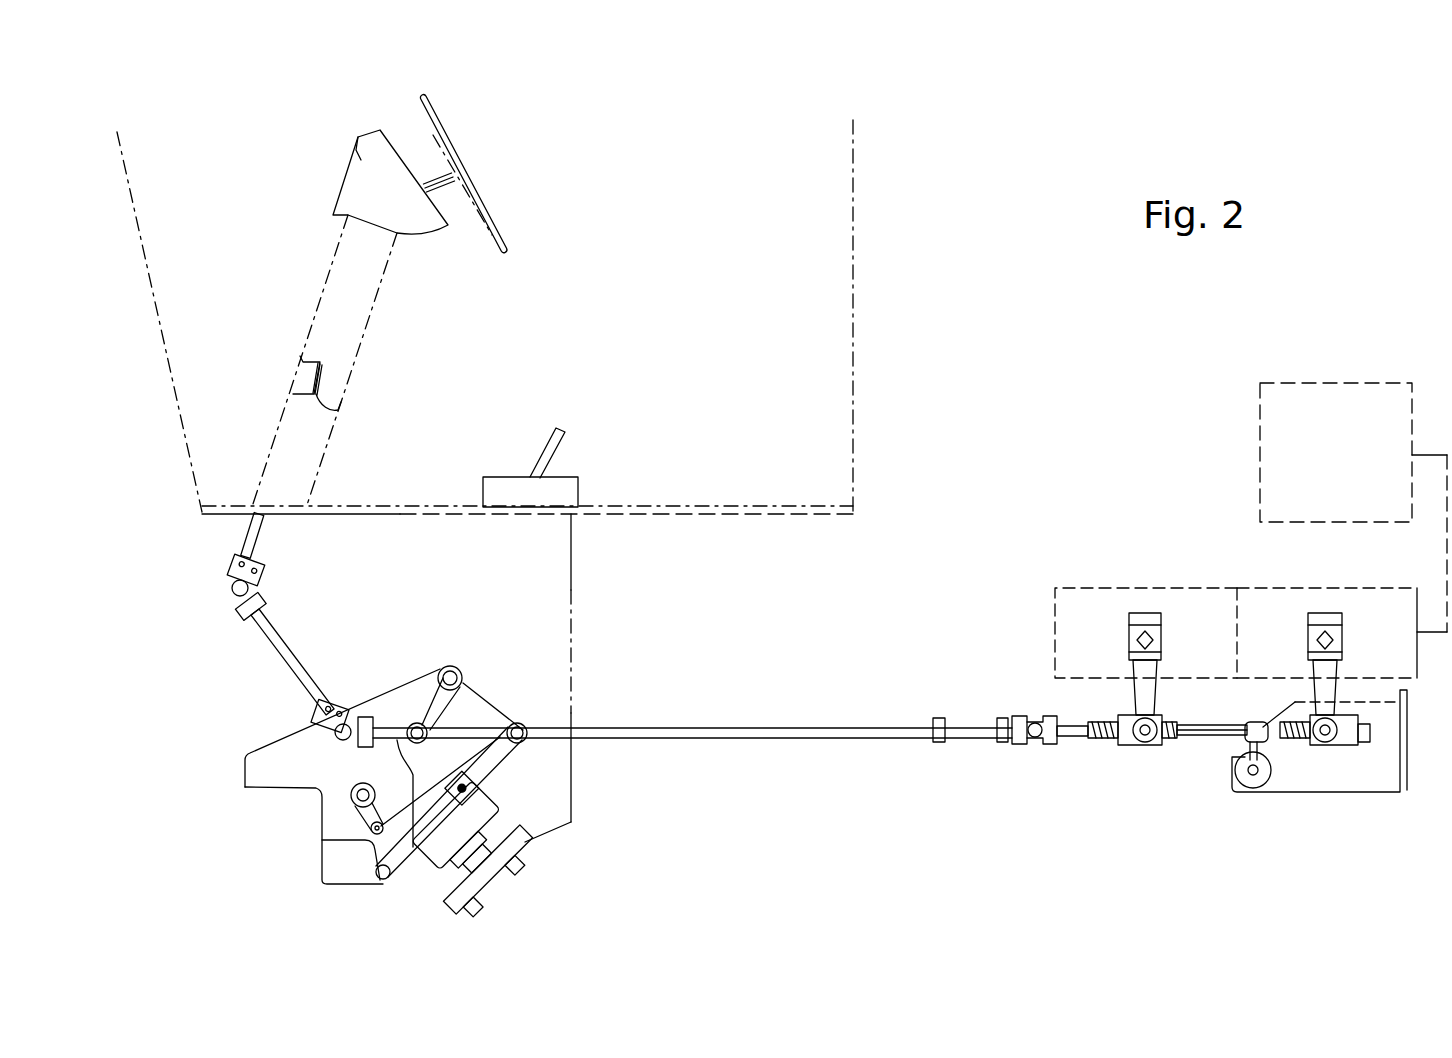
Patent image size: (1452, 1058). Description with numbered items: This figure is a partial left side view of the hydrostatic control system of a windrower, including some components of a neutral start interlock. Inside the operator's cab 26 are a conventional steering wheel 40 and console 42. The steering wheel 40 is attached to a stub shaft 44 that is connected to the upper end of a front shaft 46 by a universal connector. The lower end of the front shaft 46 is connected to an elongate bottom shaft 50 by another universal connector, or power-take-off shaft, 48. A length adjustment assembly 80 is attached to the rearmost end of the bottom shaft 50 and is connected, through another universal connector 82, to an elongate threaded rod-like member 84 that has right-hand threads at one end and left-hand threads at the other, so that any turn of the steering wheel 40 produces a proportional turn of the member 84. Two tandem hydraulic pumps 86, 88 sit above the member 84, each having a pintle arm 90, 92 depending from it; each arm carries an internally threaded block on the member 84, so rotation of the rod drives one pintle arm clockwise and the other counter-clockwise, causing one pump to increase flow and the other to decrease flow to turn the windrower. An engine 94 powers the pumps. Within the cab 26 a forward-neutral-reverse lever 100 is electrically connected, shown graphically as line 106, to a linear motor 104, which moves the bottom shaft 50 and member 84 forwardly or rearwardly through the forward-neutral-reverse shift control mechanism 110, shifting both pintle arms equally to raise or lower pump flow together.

The operator's cab 26 is at (853, 188).
The steering wheel 40 is at (498, 232).
The console 42 is at (363, 283).
The stub shaft 44 is at (435, 175).
The front shaft 46 is at (322, 378).
The universal connector 48 is at (290, 647).
The bottom shaft 50 is at (656, 727).
The length adjustment assembly 80 is at (983, 730).
The universal connector 82 is at (1037, 745).
The threaded rod-like member 84 is at (1223, 732).
The hydraulic pump 86 is at (1107, 593).
The hydraulic pump 88 is at (1343, 598).
The pintle arm 90 is at (1147, 697).
The pintle arm 92 is at (1317, 685).
The engine 94 is at (1300, 383).
The forward-neutral-reverse lever 100 is at (552, 448).
The linear motor 104 is at (481, 877).
The electrical connection line 106 is at (572, 580).
The forward-neutral-reverse shift control mechanism 110 is at (548, 620).